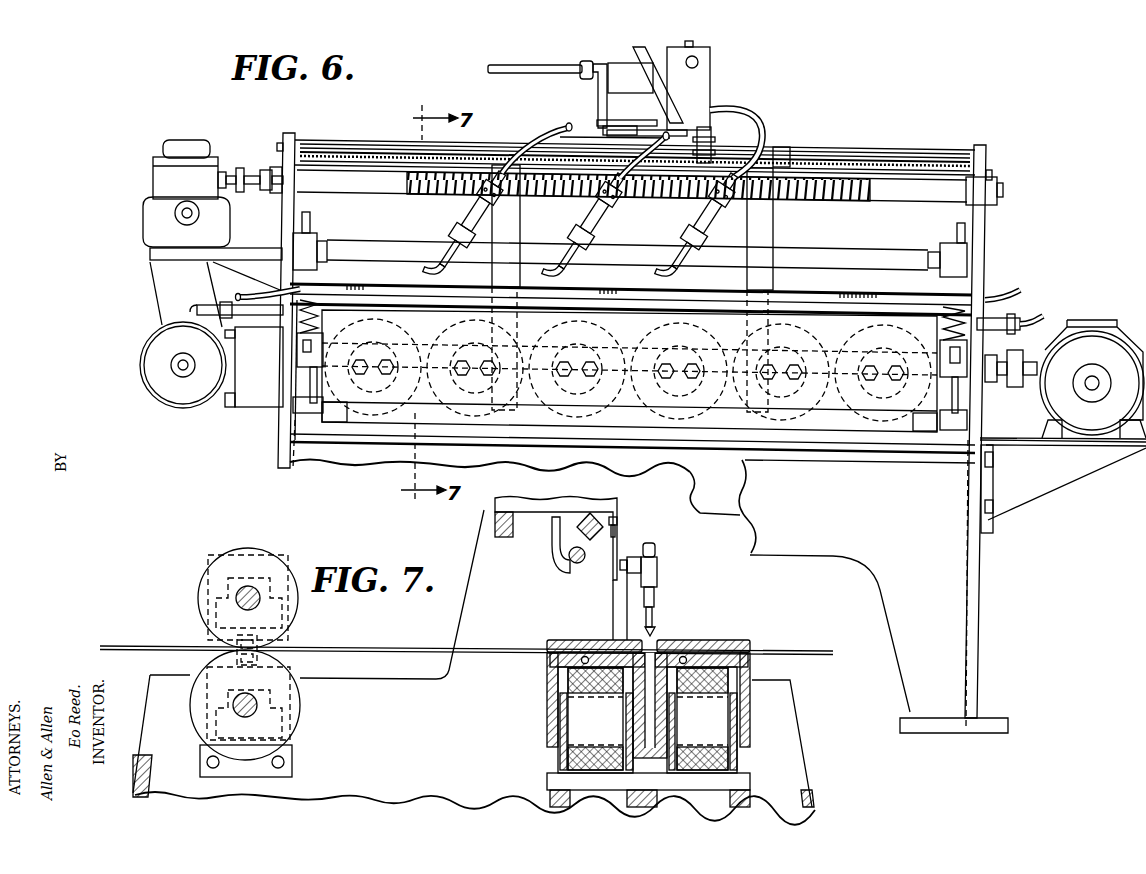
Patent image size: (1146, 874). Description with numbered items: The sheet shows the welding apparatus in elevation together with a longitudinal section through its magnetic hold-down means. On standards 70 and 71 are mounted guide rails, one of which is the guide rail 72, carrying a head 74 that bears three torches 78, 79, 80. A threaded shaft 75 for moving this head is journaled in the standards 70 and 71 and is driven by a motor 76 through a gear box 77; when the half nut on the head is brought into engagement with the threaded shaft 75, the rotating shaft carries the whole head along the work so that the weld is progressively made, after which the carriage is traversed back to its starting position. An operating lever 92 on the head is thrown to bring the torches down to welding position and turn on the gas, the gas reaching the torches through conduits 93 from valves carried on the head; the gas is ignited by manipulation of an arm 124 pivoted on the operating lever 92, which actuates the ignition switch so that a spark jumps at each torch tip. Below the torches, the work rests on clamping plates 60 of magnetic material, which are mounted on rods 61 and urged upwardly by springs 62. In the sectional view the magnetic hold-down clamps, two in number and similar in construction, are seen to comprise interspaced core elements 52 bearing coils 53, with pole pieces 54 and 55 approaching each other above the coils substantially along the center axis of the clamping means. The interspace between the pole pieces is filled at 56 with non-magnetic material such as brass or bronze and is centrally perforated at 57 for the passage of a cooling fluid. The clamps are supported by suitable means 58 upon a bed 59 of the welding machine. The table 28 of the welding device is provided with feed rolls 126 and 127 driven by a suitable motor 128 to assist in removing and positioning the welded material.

In FIG. 7, the table 28 is at (342, 648).
In FIG. 7, the core elements 52 is at (562, 742).
In FIG. 6, the coils 53 is at (600, 336).
In FIG. 7, the coils 53 is at (580, 725).
In FIG. 7, the pole piece 54 is at (562, 684).
In FIG. 7, the pole piece 55 is at (578, 692).
In FIG. 7, the non-magnetic filling 56 is at (717, 648).
In FIG. 7, the central perforation 57 is at (694, 644).
In FIG. 7, the supporting means 58 is at (553, 758).
In FIG. 7, the bed 59 is at (555, 782).
In FIG. 6, the clamping plates 60 is at (845, 290).
In FIG. 7, the clamping plates 60 is at (576, 640).
In FIG. 6, the rods 61 is at (300, 366).
In FIG. 7, the rods 61 is at (280, 568).
In FIG. 6, the springs 62 is at (296, 332).
In FIG. 6, the standard 70 is at (990, 220).
In FIG. 7, the standard 70 is at (472, 606).
In FIG. 6, the standard 71 is at (290, 200).
In FIG. 6, the guide rail 72 is at (335, 150).
In FIG. 6, the head 74 is at (790, 145).
In FIG. 6, the threaded shaft 75 is at (877, 196).
In FIG. 7, the threaded shaft 75 is at (585, 563).
In FIG. 6, the motor 76 is at (160, 372).
In FIG. 6, the gear box 77 is at (168, 206).
In FIG. 6, the torch 78 is at (480, 212).
In FIG. 7, the torch 78 is at (660, 577).
In FIG. 6, the torch 79 is at (601, 212).
In FIG. 6, the torch 80 is at (712, 212).
In FIG. 6, the operating lever 92 is at (598, 64).
In FIG. 6, the conduits 93 is at (760, 114).
In FIG. 6, the arm 124 is at (522, 74).
In FIG. 6, the feed roll 126 is at (628, 366).
In FIG. 7, the feed roll 126 is at (300, 706).
In FIG. 6, the feed roll 127 is at (515, 250).
In FIG. 7, the feed roll 127 is at (255, 562).
In FIG. 6, the motor 128 is at (1086, 322).